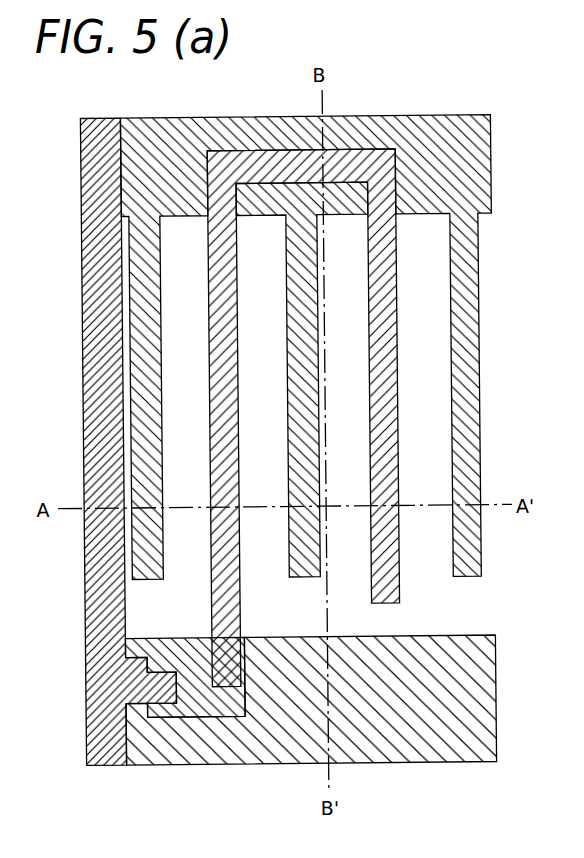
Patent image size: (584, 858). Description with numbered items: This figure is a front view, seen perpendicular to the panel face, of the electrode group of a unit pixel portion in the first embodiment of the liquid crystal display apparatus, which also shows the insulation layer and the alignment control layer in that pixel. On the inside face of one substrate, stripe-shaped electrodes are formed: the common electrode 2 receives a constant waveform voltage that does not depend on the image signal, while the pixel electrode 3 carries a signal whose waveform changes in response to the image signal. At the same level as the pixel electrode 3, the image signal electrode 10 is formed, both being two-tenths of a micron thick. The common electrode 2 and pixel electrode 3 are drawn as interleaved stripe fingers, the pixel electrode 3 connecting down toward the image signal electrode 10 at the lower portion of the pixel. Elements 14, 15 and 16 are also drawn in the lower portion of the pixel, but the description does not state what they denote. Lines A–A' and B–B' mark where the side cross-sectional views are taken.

The common electrode 2 is at (130, 174).
The pixel electrode 3 is at (211, 429).
The image signal electrode 10 is at (98, 294).
The signal line 14 is at (494, 649).
The connection portion 15 is at (125, 770).
The conductive layer 16 is at (180, 666).